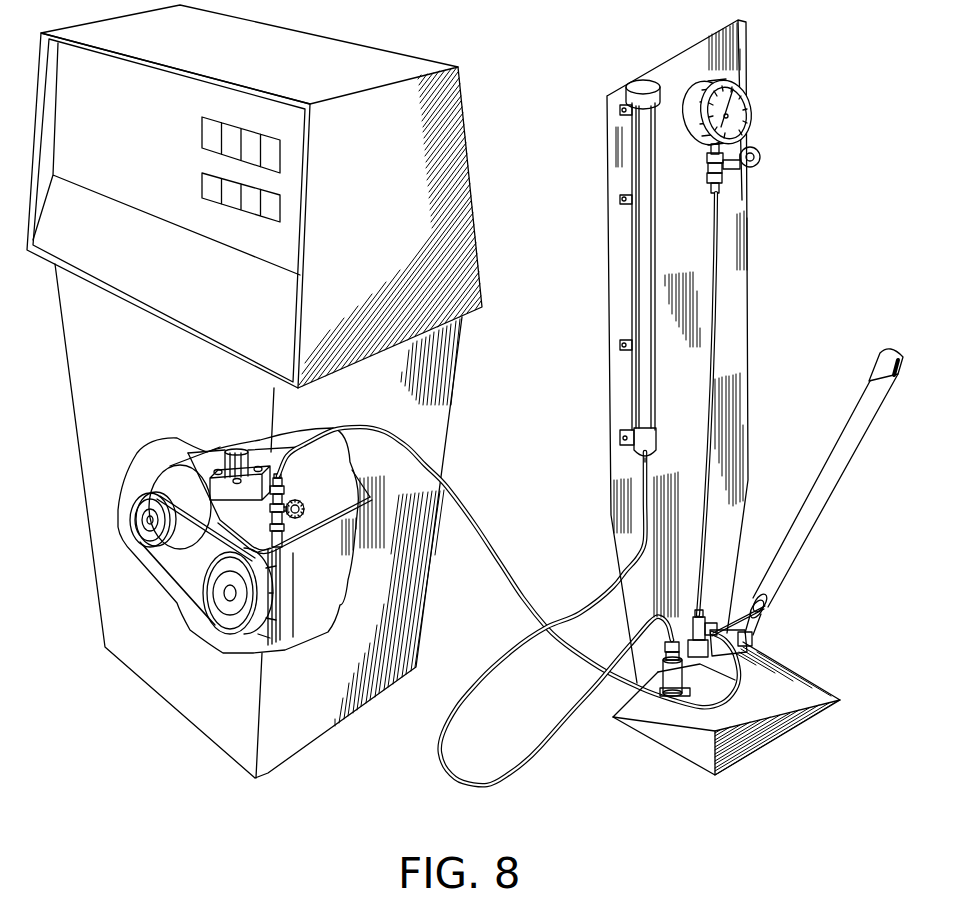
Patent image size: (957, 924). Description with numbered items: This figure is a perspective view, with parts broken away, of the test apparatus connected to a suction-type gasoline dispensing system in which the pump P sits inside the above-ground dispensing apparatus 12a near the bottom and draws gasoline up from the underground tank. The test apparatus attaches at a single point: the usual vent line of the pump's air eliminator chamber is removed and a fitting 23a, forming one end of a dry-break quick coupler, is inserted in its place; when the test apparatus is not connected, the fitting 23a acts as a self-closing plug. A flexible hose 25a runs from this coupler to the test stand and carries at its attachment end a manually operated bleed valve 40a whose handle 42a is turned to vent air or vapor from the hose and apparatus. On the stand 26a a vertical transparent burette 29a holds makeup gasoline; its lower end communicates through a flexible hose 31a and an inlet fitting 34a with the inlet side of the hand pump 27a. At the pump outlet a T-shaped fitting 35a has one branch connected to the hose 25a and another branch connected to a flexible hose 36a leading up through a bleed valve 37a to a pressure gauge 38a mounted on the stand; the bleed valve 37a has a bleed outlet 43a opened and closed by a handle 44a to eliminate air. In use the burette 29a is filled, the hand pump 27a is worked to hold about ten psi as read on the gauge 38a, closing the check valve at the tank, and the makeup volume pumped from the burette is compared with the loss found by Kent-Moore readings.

The above-ground dispensing apparatus 12a is at (453, 393).
The pump P is at (303, 598).
The fitting 23a is at (300, 548).
The bleed valve 40a is at (278, 490).
The handle 42a is at (302, 508).
The hose 25a is at (497, 566).
The flexible hose 31a is at (438, 737).
The stand 26a is at (613, 495).
The burette 29a is at (581, 273).
The pressure gauge 38a is at (752, 96).
The handle 44a is at (760, 150).
The bleed outlet 43a is at (732, 176).
The bleed valve 37a is at (708, 172).
The flexible hose 36a is at (718, 343).
The hand pump 27a is at (688, 665).
The inlet fitting 34a is at (663, 682).
The T-shaped fitting 35a is at (716, 638).